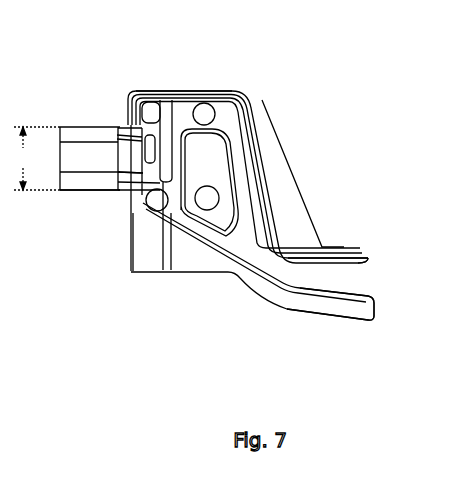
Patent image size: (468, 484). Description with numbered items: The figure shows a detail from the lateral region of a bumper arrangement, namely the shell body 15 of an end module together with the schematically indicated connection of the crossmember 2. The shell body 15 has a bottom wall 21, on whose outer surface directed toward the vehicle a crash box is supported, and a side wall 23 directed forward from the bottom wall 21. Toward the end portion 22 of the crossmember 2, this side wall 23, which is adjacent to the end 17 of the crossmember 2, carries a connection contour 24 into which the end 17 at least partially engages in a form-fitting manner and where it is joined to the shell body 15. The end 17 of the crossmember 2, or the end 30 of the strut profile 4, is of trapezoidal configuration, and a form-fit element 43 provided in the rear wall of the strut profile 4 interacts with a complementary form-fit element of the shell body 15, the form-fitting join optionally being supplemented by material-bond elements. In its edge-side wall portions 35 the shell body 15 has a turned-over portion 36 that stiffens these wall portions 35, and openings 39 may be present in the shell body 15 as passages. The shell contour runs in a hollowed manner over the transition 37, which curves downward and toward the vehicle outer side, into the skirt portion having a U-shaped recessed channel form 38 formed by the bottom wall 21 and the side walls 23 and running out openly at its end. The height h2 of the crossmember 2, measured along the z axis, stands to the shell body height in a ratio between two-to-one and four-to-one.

The crossmember 2 is at (59, 124).
The strut profile 4 is at (72, 194).
The shell body 15 is at (265, 127).
The end of the crossmember 17 is at (113, 127).
The bottom wall 21 is at (337, 285).
The end portion 22 is at (102, 194).
The side wall 23 is at (366, 258).
The connection contour 24 is at (135, 203).
The end of the strut profile 30 is at (176, 128).
The edge-side wall portion 35 is at (270, 172).
The turned-over portion 36 is at (347, 249).
The transition 37 is at (276, 298).
The channel form 38 is at (0, 277).
The opening 39 is at (212, 95).
The form-fit element 43 is at (143, 123).
The height of the crossmember h2 is at (36, 158).